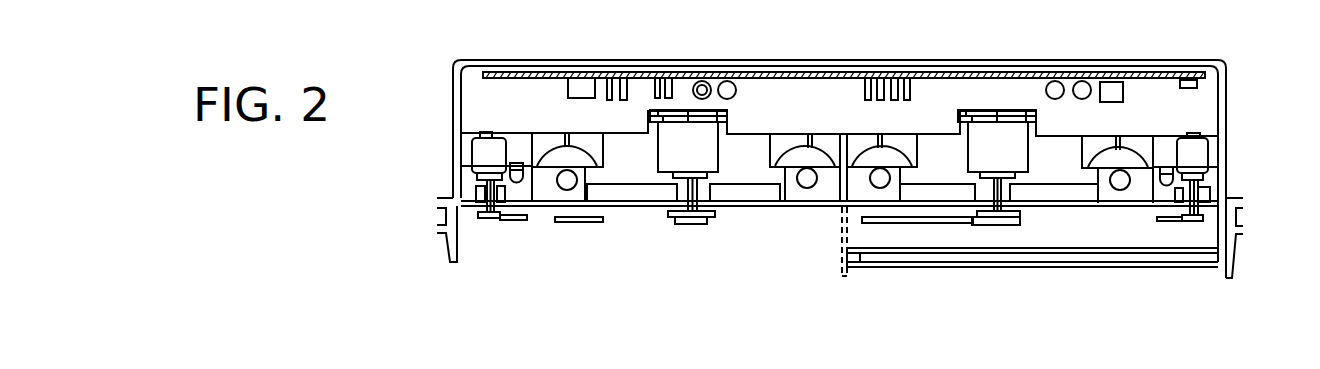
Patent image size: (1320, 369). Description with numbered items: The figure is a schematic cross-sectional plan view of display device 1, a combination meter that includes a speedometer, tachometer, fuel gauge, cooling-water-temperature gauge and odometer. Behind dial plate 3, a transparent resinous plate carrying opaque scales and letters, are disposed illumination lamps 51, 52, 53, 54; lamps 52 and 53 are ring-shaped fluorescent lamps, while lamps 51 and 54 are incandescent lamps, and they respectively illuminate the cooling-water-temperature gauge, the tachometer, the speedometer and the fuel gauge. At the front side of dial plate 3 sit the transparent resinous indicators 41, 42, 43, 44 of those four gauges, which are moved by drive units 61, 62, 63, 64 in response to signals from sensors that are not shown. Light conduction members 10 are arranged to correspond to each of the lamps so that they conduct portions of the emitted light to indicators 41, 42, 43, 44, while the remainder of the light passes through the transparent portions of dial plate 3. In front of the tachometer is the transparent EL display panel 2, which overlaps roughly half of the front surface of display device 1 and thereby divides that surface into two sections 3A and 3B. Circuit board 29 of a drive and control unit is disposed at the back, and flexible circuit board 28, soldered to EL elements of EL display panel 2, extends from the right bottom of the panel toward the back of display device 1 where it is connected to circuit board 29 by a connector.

The display device 1 is at (444, 115).
The EL display panel 2 is at (990, 268).
The dial plate 3 is at (817, 208).
The section of the front surface 3A is at (1088, 225).
The section of the front surface 3B is at (757, 223).
The light conduction member 10 is at (473, 188).
The flexible circuit board 28 is at (1217, 83).
The circuit board 29 is at (1090, 77).
The indicator 41 is at (1170, 222).
The indicator 42 is at (897, 223).
The indicator 43 is at (577, 223).
The indicator 44 is at (510, 221).
The illumination lamp 51 is at (1167, 165).
The illumination lamp 52 is at (885, 168).
The illumination lamp 53 is at (562, 170).
The illumination lamp 54 is at (515, 167).
The drive unit 61 is at (1213, 134).
The drive unit 62 is at (997, 143).
The drive unit 63 is at (680, 138).
The drive unit 64 is at (488, 148).